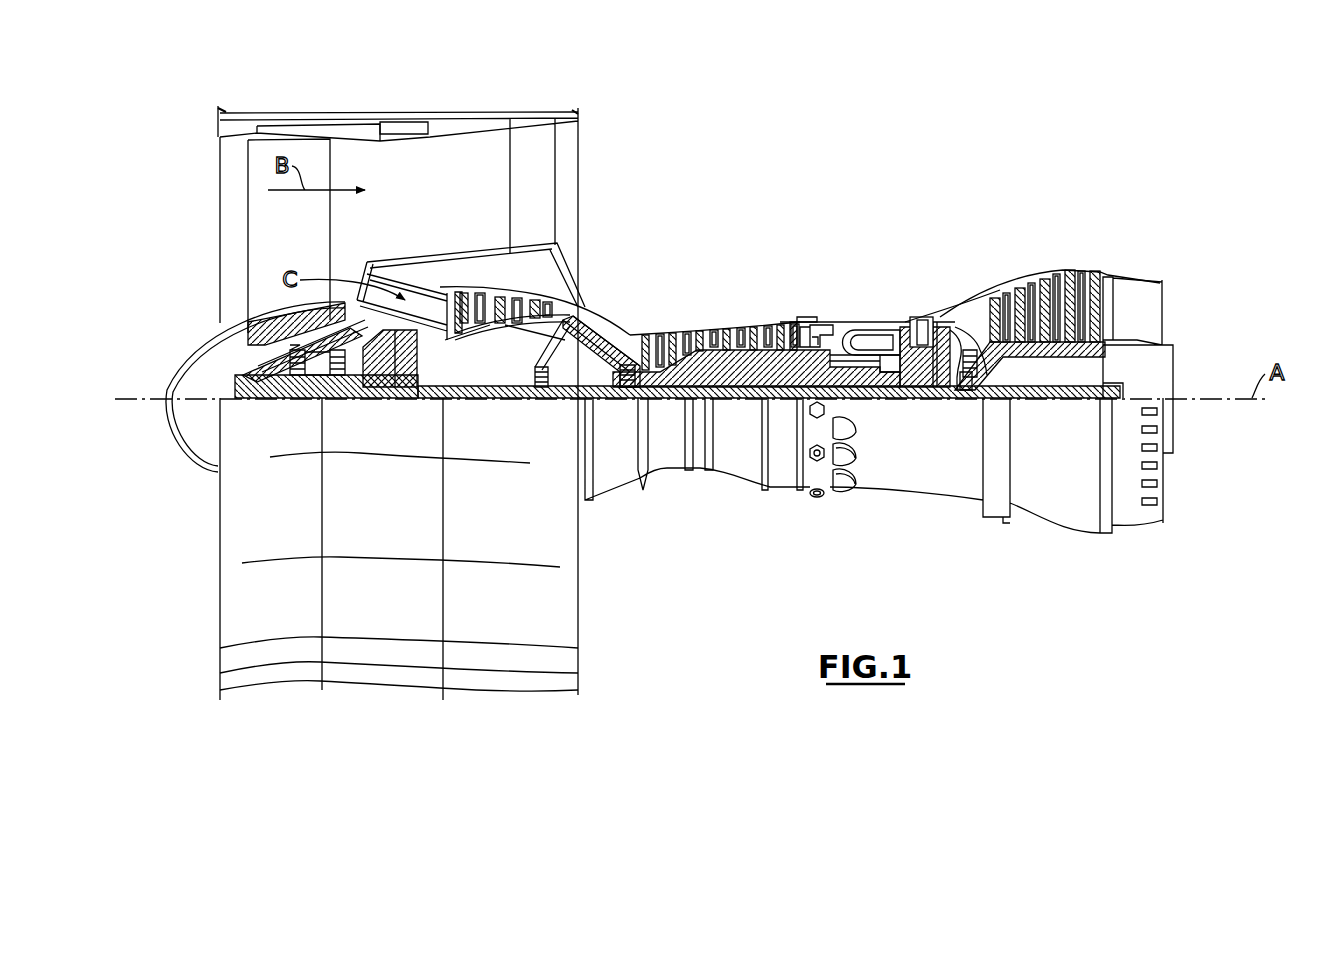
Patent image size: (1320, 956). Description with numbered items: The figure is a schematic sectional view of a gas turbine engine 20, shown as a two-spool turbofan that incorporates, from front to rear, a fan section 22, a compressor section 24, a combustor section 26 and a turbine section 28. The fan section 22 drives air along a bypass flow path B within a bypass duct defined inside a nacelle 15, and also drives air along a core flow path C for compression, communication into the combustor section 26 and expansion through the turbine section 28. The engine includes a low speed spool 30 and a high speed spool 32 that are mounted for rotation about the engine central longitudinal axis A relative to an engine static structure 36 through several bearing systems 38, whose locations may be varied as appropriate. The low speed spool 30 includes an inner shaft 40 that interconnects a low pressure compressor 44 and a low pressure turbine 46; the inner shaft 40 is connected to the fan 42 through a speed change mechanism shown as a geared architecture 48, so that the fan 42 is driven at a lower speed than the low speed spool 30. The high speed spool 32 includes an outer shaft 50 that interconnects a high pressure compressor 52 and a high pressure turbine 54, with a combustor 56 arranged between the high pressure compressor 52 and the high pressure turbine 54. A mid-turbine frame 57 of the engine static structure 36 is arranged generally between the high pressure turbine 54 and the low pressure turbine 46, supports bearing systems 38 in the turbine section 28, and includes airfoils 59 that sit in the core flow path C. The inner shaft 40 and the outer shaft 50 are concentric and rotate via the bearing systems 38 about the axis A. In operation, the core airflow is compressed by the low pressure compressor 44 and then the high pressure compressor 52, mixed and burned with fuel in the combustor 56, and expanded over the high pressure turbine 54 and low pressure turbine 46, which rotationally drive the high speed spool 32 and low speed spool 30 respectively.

The nacelle 15 is at (400, 121).
The gas turbine engine 20 is at (862, 168).
The fan section 22 is at (330, 105).
The compressor section 24 is at (633, 305).
The combustor section 26 is at (855, 300).
The turbine section 28 is at (1000, 262).
The low speed spool 30 is at (740, 402).
The high speed spool 32 is at (782, 335).
The engine static structure 36 is at (780, 493).
The bearing systems 38 is at (540, 388).
The inner shaft 40 is at (604, 400).
The fan 42 is at (305, 244).
The low pressure compressor 44 is at (515, 305).
The low pressure turbine 46 is at (1048, 280).
The geared architecture 48 is at (405, 378).
The outer shaft 50 is at (868, 398).
The high pressure compressor 52 is at (715, 358).
The high pressure turbine 54 is at (922, 335).
The combustor 56 is at (862, 340).
The mid-turbine frame 57 is at (968, 300).
The airfoils 59 is at (962, 340).